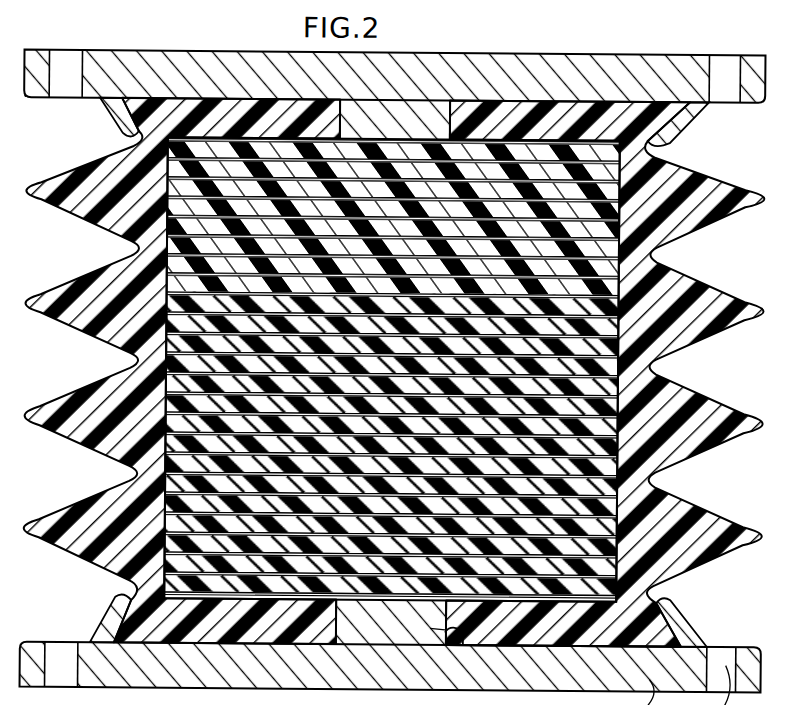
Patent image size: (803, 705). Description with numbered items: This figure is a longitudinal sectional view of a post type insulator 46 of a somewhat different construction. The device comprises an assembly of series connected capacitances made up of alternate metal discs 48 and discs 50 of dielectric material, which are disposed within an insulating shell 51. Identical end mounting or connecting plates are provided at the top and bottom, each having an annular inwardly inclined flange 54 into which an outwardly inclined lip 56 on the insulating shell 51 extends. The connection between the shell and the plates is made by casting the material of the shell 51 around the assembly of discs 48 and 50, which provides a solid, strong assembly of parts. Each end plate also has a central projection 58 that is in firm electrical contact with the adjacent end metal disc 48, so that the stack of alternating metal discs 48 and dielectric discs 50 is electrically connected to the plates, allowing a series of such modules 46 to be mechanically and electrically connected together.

The post type insulator 46 is at (403, 372).
The metal discs 48 is at (190, 257).
The discs of dielectric material 50 is at (207, 363).
The insulating shell 51 is at (692, 335).
The annular inwardly inclined flange 54 is at (650, 598).
The outwardly inclined lip 56 is at (658, 643).
The central projection 58 is at (462, 643).